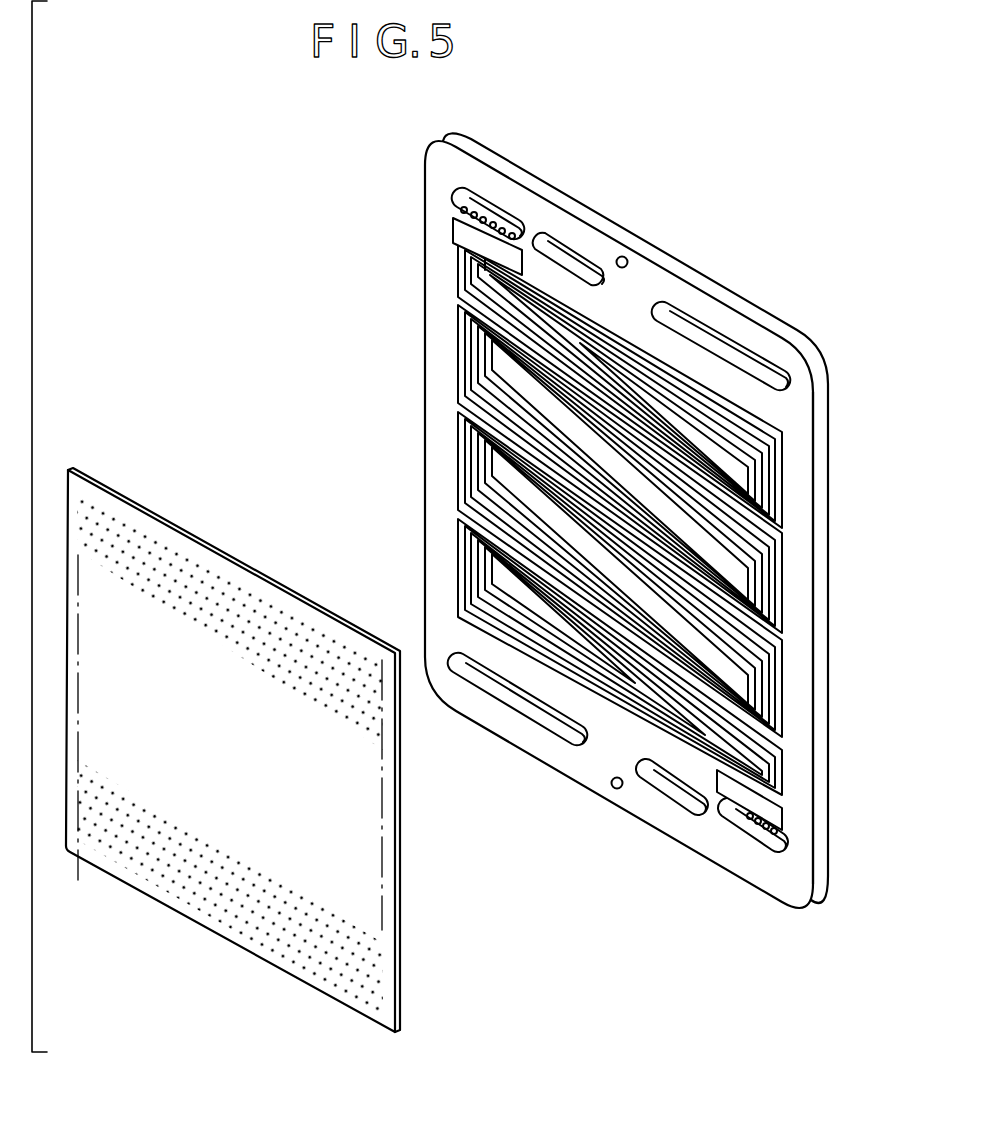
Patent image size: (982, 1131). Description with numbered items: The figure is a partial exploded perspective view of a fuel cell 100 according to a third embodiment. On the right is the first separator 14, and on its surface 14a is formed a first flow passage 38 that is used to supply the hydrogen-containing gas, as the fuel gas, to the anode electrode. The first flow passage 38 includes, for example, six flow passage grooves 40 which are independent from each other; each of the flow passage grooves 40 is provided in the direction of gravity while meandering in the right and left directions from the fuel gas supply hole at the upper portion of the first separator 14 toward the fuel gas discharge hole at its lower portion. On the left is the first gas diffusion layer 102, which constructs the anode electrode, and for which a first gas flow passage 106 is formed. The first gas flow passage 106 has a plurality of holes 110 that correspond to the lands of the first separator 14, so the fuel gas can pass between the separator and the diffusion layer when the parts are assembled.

The fuel cell 100 is at (651, 121).
The first separator 14 is at (666, 243).
The surface 14a is at (802, 442).
The first flow passage 38 is at (784, 553).
The flow passage grooves 40 is at (762, 603).
The first gas diffusion layer 102 is at (198, 536).
The first gas flow passage 106 is at (375, 969).
The holes 110 is at (280, 622).